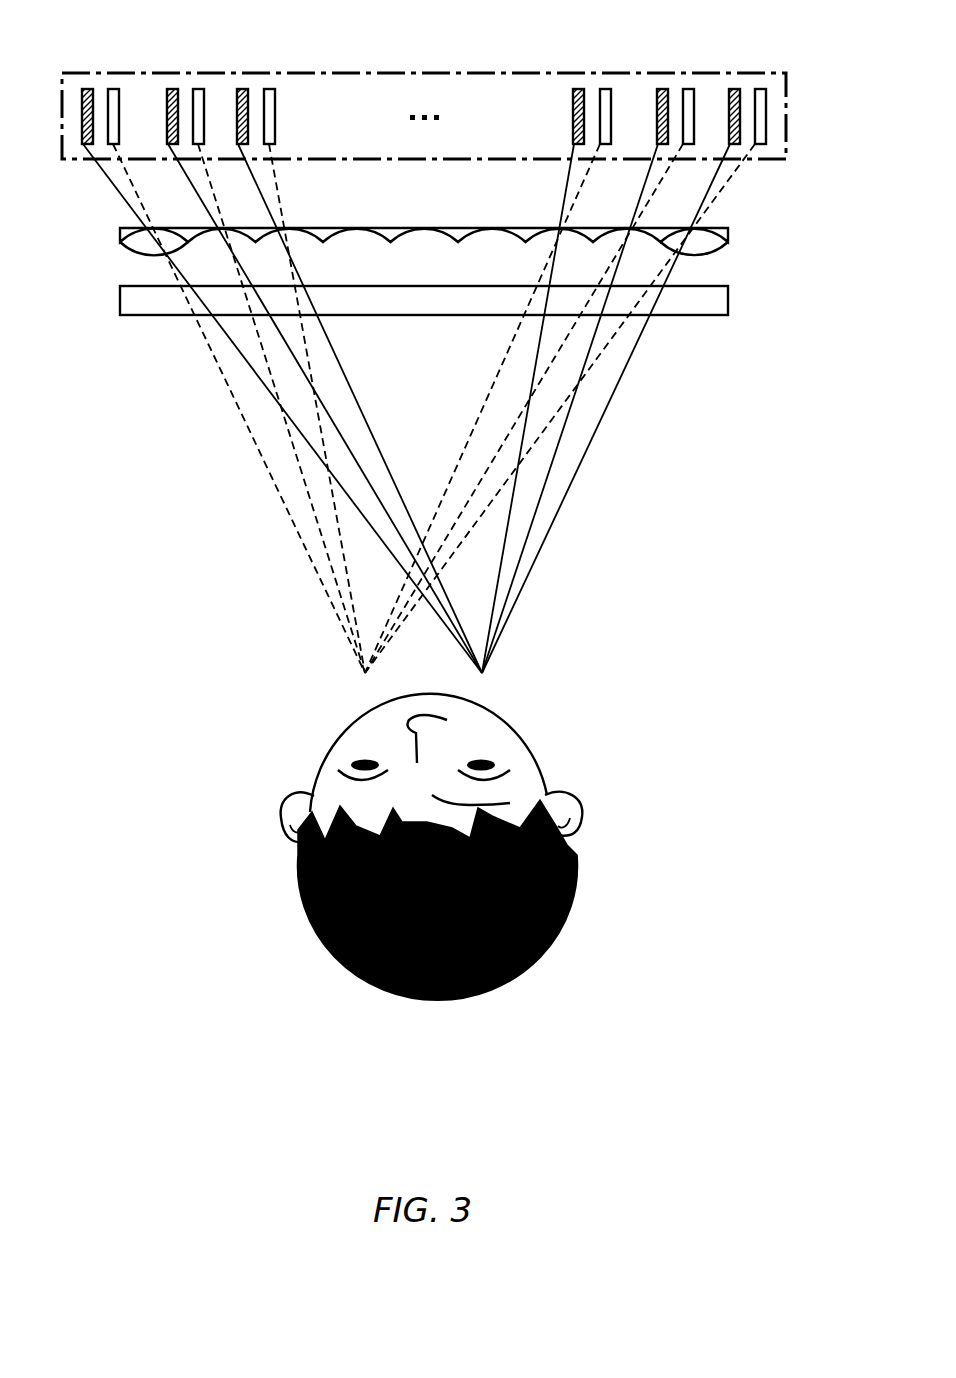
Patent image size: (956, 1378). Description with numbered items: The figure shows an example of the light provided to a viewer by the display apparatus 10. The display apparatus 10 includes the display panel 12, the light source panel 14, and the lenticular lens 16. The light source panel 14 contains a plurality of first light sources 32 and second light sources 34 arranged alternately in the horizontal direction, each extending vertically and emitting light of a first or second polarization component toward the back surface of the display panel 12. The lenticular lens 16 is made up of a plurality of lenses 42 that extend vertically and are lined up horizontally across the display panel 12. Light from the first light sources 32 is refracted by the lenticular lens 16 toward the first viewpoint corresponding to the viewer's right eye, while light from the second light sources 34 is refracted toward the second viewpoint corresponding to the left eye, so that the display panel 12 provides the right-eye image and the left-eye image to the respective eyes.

The display apparatus 10 is at (437, 1103).
The display panel 12 is at (728, 300).
The light source panel 14 is at (786, 113).
The lenticular lens 16 is at (728, 232).
The first light source 32 is at (86, 89).
The second light source 34 is at (113, 89).
The lens 42 is at (128, 247).